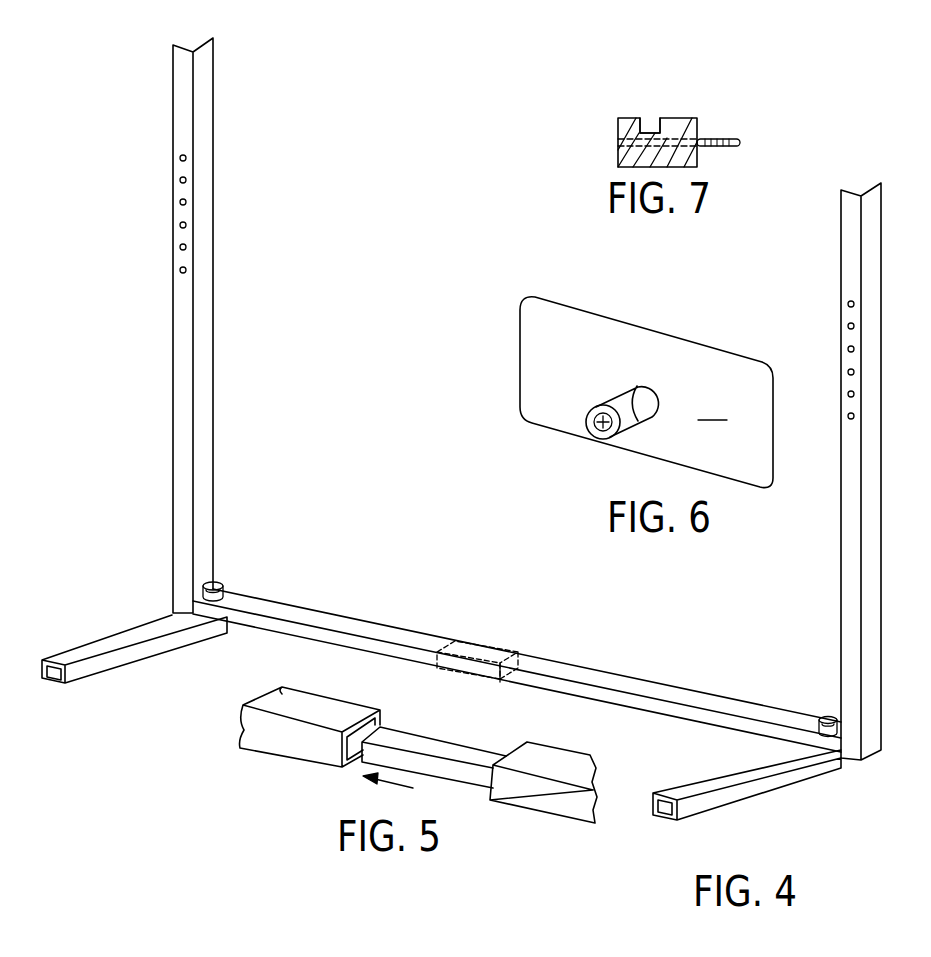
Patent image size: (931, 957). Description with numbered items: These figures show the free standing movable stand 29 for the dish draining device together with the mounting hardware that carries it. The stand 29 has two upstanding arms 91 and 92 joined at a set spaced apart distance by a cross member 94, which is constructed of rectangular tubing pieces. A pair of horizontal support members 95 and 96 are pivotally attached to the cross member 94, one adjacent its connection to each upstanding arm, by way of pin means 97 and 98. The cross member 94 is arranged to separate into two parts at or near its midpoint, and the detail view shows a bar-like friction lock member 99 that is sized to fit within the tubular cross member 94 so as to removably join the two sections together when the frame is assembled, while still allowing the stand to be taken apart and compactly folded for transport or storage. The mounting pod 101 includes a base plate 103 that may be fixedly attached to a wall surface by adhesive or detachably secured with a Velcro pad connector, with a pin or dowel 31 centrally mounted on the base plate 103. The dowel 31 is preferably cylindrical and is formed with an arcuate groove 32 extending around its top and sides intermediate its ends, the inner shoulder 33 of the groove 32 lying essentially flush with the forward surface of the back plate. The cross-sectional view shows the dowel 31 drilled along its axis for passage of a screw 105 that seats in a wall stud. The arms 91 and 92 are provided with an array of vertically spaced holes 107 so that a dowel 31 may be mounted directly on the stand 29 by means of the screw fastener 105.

In FIG. 4, the movable stand 29 is at (470, 638).
In FIG. 6, the dowel 31 is at (598, 425).
In FIG. 7, the dowel 31 is at (617, 132).
In FIG. 6, the arcuate groove 32 is at (627, 393).
In FIG. 7, the arcuate groove 32 is at (656, 130).
In FIG. 7, the inner shoulder 33 is at (660, 124).
In FIG. 4, the upstanding arm 91 is at (210, 153).
In FIG. 4, the upstanding arm 92 is at (872, 312).
In FIG. 4, the cross member 94 is at (631, 685).
In FIG. 5, the cross member 94 is at (295, 751).
In FIG. 4, the horizontal support member 95 is at (127, 657).
In FIG. 4, the horizontal support member 96 is at (757, 794).
In FIG. 4, the pin means 97 is at (219, 582).
In FIG. 4, the pin means 98 is at (829, 716).
In FIG. 5, the friction lock member 99 is at (444, 748).
In FIG. 6, the mounting pod 101 is at (709, 324).
In FIG. 6, the base plate 103 is at (712, 409).
In FIG. 7, the screw 105 is at (712, 138).
In FIG. 4, the vertically spaced holes 107 is at (180, 202).